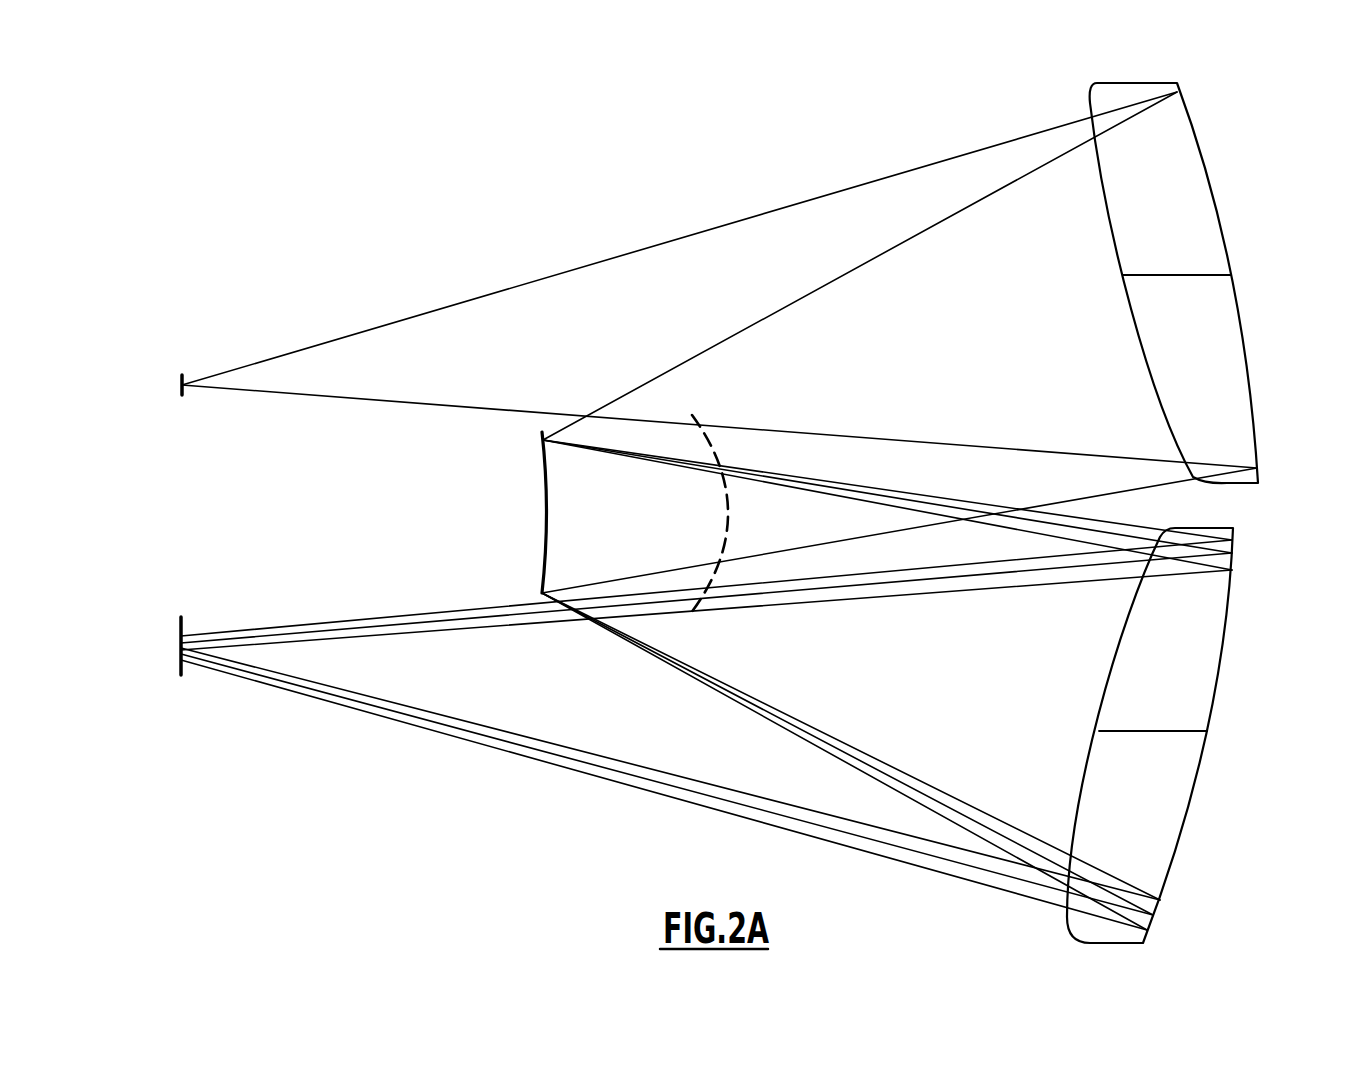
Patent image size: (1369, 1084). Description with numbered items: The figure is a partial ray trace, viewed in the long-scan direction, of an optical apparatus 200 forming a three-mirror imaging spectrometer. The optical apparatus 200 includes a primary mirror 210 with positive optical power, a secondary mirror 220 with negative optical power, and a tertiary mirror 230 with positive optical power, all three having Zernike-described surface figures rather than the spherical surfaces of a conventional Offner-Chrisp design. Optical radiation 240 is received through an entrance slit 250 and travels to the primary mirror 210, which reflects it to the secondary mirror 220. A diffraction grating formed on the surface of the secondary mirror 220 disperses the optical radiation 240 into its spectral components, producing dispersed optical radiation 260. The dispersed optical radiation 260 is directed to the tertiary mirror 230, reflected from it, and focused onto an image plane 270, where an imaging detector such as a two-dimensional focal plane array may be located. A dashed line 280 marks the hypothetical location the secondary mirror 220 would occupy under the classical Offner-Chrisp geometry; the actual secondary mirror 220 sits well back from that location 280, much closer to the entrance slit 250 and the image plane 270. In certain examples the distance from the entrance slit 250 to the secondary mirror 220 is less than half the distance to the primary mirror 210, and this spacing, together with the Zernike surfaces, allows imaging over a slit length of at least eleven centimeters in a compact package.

The optical apparatus 200 is at (292, 141).
The primary mirror 210 is at (1230, 174).
The secondary mirror 220 is at (531, 507).
The tertiary mirror 230 is at (1211, 810).
The optical radiation 240 is at (693, 207).
The entrance slit 250 is at (173, 381).
The dispersed optical radiation 260 is at (605, 793).
The image plane 270 is at (175, 651).
The hypothetical location of the secondary mirror 280 is at (725, 409).